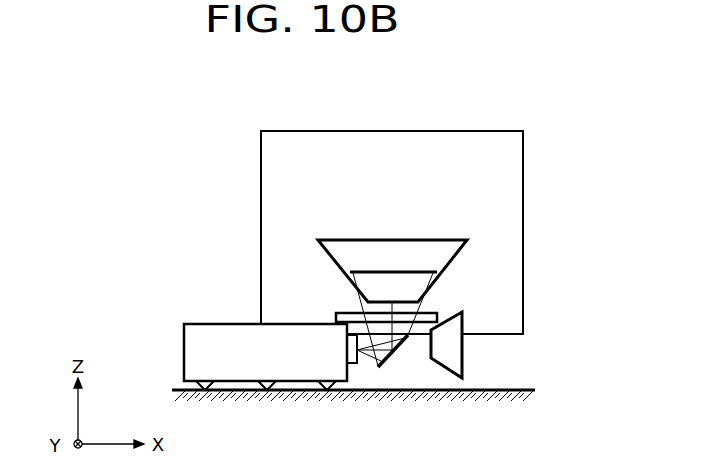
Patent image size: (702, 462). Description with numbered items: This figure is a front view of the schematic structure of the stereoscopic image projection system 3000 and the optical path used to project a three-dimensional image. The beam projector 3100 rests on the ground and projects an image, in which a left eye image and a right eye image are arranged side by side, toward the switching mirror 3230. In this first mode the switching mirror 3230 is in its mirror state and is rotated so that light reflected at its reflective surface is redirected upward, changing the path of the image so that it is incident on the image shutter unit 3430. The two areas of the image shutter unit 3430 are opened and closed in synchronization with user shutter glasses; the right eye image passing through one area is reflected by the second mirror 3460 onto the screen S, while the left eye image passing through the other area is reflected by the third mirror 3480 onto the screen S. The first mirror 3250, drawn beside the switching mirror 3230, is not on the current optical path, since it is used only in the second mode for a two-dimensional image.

The stereoscopic image projection system 3000 is at (163, 171).
The screen S is at (393, 130).
The beam projector 3100 is at (188, 352).
The image shutter unit 3430 is at (338, 313).
The third mirror 3480 is at (390, 240).
The second mirror 3460 is at (417, 287).
The switching mirror 3230 is at (399, 346).
The first mirror 3250 is at (462, 358).